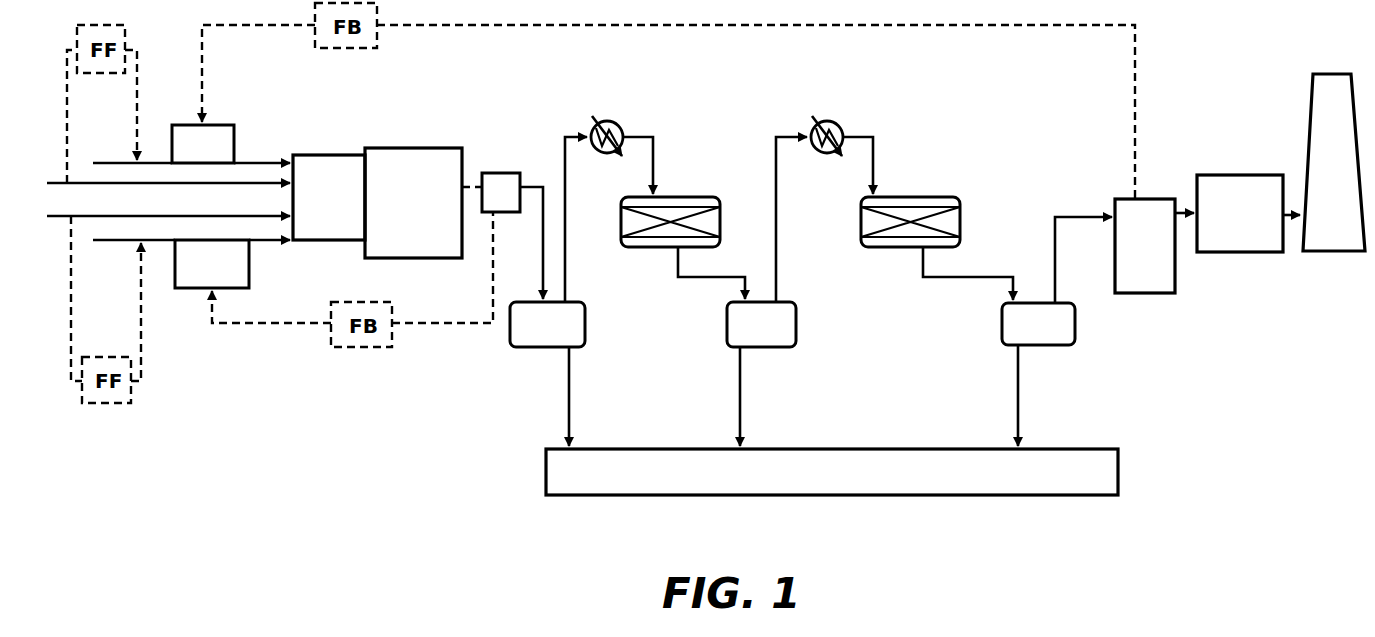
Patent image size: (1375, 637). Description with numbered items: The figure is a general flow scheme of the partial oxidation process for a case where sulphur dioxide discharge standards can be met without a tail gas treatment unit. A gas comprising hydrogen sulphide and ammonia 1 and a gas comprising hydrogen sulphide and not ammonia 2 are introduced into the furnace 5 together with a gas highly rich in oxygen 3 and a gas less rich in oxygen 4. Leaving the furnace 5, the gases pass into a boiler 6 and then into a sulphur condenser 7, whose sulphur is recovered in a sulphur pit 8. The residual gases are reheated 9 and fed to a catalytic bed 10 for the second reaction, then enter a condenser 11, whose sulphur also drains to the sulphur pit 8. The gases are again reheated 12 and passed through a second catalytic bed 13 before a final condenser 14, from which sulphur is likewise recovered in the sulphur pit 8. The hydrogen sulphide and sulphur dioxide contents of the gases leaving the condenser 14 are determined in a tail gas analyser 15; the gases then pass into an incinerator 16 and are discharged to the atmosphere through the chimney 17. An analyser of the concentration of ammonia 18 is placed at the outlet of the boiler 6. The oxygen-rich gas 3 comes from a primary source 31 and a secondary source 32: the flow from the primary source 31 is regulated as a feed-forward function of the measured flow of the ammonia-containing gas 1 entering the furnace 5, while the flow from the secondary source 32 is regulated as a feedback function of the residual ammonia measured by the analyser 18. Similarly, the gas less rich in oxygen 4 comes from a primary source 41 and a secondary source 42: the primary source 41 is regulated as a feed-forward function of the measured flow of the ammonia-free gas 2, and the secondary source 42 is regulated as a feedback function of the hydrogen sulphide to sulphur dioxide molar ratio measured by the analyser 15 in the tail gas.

The gas comprising hydrogen sulphide and ammonia 1 is at (168, 225).
The gas comprising hydrogen sulphide and not ammonia 2 is at (168, 198).
The gas highly rich in oxygen 3 is at (269, 253).
The gas less rich in oxygen 4 is at (262, 150).
The furnace 5 is at (336, 211).
The boiler 6 is at (418, 216).
The sulphur condenser 7 is at (555, 337).
The sulphur pit 8 is at (844, 484).
The reheater 9 is at (622, 147).
The catalytic bed 10 is at (683, 236).
The condenser 11 is at (774, 337).
The reheater 12 is at (842, 147).
The second catalytic bed 13 is at (937, 237).
The condenser 14 is at (1051, 337).
The tail gas analyser 15 is at (1158, 255).
The incinerator 16 is at (1254, 226).
The chimney 17 is at (1347, 153).
The analyser of the concentration of ammonia 18 is at (514, 203).
The primary source 31 is at (131, 254).
The secondary source 32 is at (209, 279).
The primary source 41 is at (129, 152).
The secondary source 42 is at (198, 130).